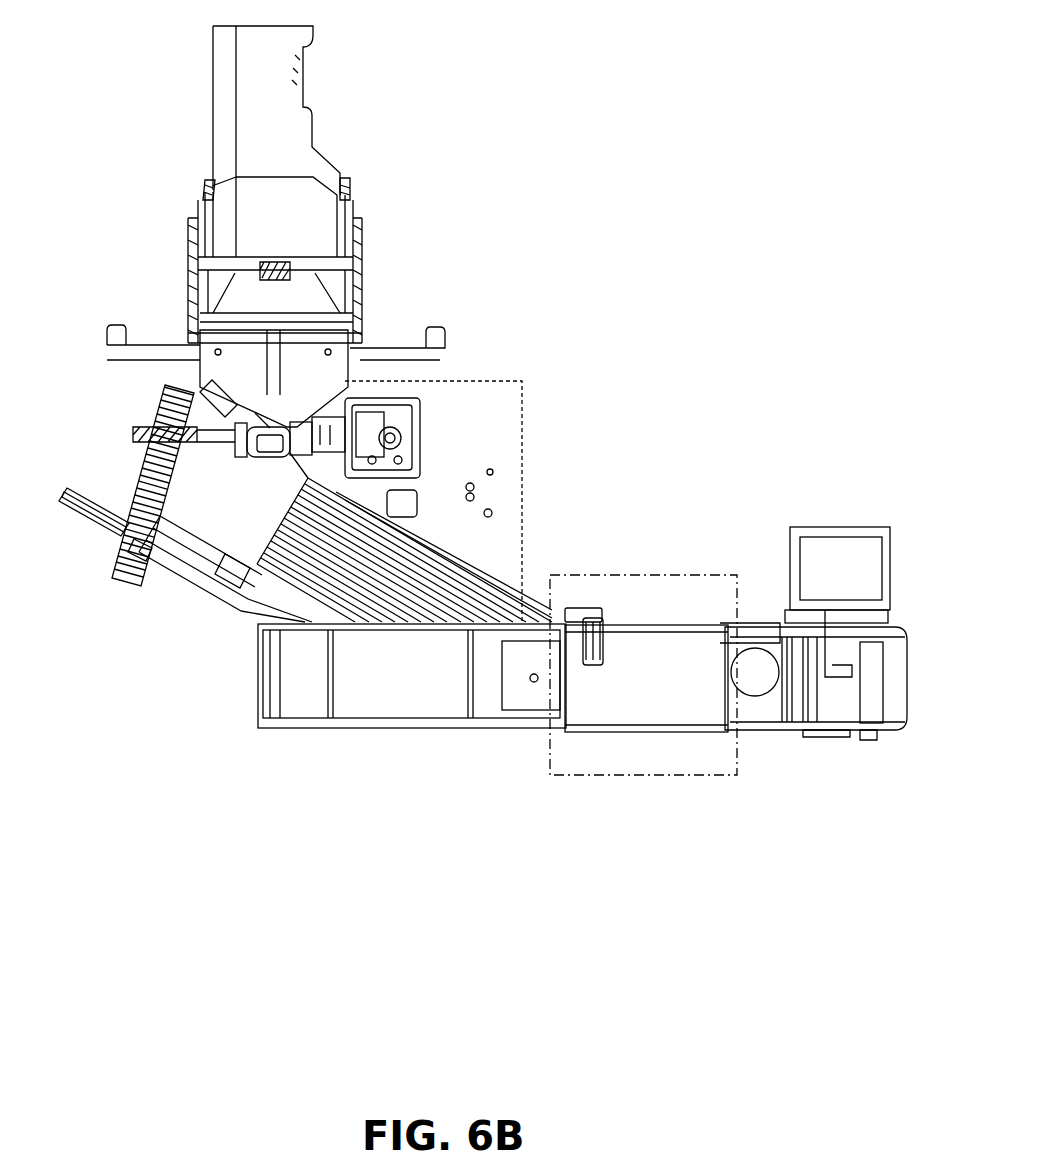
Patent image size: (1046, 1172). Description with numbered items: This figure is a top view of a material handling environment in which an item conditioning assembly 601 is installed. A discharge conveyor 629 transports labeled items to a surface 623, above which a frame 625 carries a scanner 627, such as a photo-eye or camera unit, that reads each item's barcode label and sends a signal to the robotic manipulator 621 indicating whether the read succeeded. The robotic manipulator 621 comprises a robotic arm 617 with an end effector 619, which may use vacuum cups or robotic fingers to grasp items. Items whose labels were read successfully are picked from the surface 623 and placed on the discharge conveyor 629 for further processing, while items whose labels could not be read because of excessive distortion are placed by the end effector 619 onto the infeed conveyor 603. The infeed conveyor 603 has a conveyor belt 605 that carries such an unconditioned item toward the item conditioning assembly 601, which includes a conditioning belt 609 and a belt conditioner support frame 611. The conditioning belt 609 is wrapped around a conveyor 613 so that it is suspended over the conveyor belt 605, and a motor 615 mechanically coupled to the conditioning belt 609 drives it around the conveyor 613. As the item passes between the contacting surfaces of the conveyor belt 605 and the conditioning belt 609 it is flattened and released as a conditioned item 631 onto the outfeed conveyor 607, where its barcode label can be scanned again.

The item conditioning assembly 601 is at (641, 575).
The infeed conveyor 603 is at (292, 703).
The conveyor belt 605 is at (528, 700).
The outfeed conveyor 607 is at (650, 705).
The conditioning belt 609 is at (754, 676).
The belt conditioner support frame 611 is at (895, 693).
The conveyor 613 is at (830, 525).
The motor 615 is at (605, 648).
The robotic arm 617 is at (453, 583).
The end effector 619 is at (503, 510).
The robotic manipulator 621 is at (475, 484).
The surface 623 is at (487, 417).
The frame 625 is at (400, 346).
The scanner 627 is at (288, 117).
The discharge conveyor 629 is at (150, 487).
The conditioned item 631 is at (237, 513).